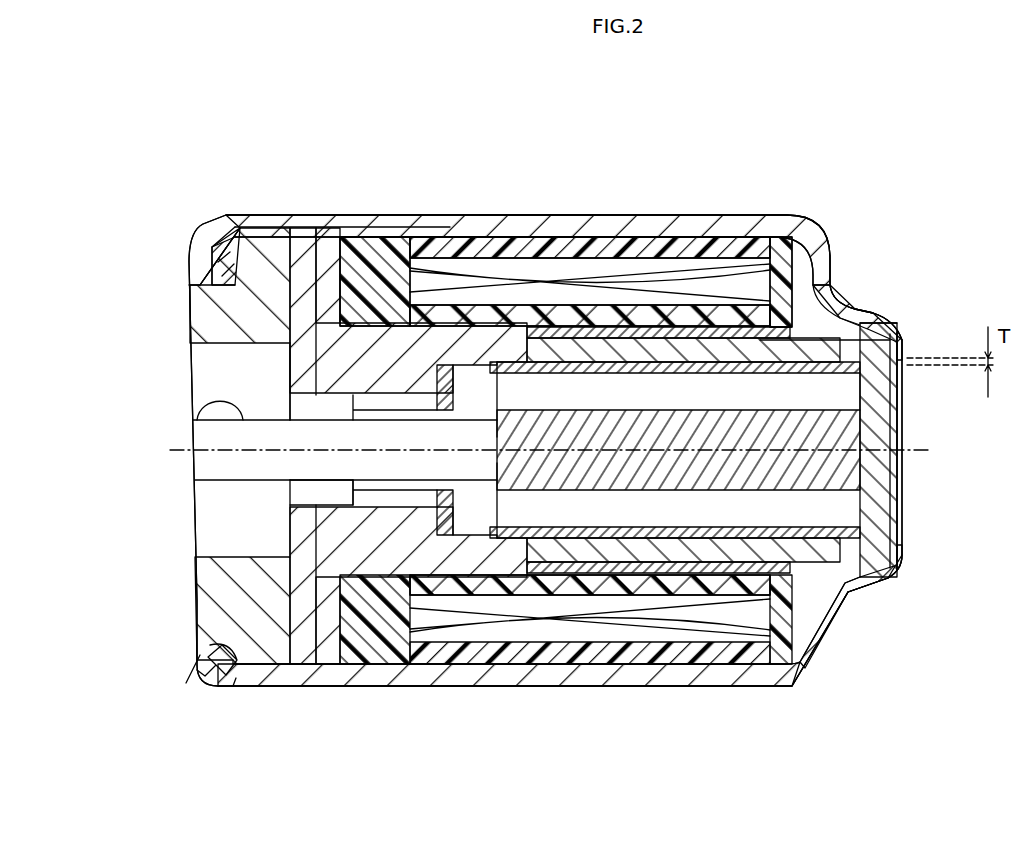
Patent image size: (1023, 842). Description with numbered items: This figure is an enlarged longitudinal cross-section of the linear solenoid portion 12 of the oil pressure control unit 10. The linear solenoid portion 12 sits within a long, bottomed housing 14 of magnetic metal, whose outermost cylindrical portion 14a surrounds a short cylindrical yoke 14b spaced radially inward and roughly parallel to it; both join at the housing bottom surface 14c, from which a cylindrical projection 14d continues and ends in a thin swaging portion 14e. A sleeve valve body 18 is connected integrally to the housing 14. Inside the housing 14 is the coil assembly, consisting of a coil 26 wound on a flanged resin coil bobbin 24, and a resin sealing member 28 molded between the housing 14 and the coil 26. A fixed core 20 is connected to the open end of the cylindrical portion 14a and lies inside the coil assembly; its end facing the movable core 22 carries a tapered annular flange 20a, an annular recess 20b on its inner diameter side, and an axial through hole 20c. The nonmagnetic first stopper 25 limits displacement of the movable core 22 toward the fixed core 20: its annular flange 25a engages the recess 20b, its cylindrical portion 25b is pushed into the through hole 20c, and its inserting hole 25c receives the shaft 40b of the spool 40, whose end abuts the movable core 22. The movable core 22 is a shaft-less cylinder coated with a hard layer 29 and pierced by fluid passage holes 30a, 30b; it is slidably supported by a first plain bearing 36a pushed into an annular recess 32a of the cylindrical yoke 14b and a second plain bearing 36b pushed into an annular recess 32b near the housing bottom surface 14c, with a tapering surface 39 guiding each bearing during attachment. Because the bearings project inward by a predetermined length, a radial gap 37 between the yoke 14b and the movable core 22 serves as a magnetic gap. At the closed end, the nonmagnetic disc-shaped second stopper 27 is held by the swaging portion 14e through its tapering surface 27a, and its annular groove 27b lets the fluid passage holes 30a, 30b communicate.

The oil pressure control unit 10 is at (867, 128).
The linear solenoid portion 12 is at (660, 277).
The housing 14 is at (577, 213).
The cylindrical portion 14a is at (513, 213).
The cylindrical yoke 14b is at (830, 277).
The housing bottom surface 14c is at (822, 625).
The cylindrical projection 14d is at (858, 590).
The swaging portion 14e is at (900, 580).
The valve body 18 is at (213, 583).
The fixed core 20 is at (353, 688).
The annular flange 20a is at (472, 215).
The annular recess 20b is at (437, 688).
The through hole 20c is at (313, 497).
The movable core 22 is at (478, 688).
The coil bobbin 24 is at (610, 690).
The first stopper 25 is at (243, 688).
The annular flange 25a is at (413, 213).
The cylindrical portion 25b is at (320, 213).
The inserting hole 25c is at (373, 480).
The coil 26 is at (453, 215).
The second stopper 27 is at (905, 470).
The tapering surface 27a is at (880, 328).
The annular groove 27b is at (895, 410).
The resin sealing member 28 is at (392, 215).
The hard layer 29 is at (663, 690).
The fluid passage hole 30a is at (900, 375).
The fluid passage hole 30b is at (898, 520).
The annular recess 32a is at (553, 690).
The annular recess 32b is at (755, 690).
The first plain bearing 36a is at (608, 215).
The second plain bearing 36b is at (840, 318).
The gap 37 is at (717, 215).
The tapering surface 39 is at (538, 215).
The spool 40 is at (190, 403).
The shaft 40b is at (290, 387).